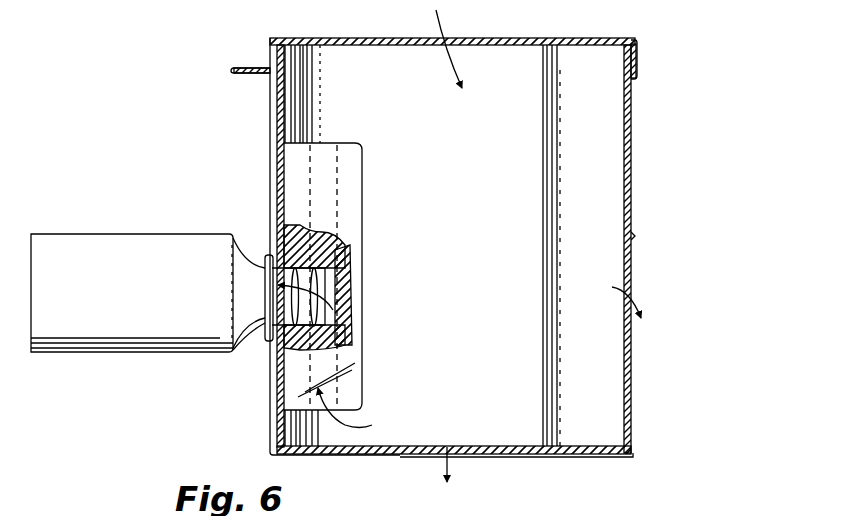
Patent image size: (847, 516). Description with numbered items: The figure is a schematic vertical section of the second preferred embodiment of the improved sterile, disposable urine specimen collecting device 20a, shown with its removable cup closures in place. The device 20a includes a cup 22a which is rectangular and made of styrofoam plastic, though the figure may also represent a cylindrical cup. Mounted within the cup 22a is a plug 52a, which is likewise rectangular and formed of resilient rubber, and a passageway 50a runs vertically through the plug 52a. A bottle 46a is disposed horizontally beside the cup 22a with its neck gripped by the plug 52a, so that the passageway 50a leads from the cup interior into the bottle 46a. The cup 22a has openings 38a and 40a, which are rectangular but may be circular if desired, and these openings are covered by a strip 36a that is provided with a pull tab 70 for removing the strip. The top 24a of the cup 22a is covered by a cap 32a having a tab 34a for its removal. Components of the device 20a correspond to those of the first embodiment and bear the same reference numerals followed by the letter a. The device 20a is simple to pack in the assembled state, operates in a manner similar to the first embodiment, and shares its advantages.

The device 20a is at (789, 86).
The cup 22a is at (276, 140).
The top 24a is at (498, 58).
The cap 32a is at (605, 41).
The tab 34a is at (246, 66).
The strip 36a is at (637, 370).
The opening 38a is at (450, 447).
The opening 40a is at (632, 290).
The bottle 46a is at (150, 232).
The passageway 50a is at (325, 143).
The plug 52a is at (364, 190).
The pull tab 70 is at (633, 236).